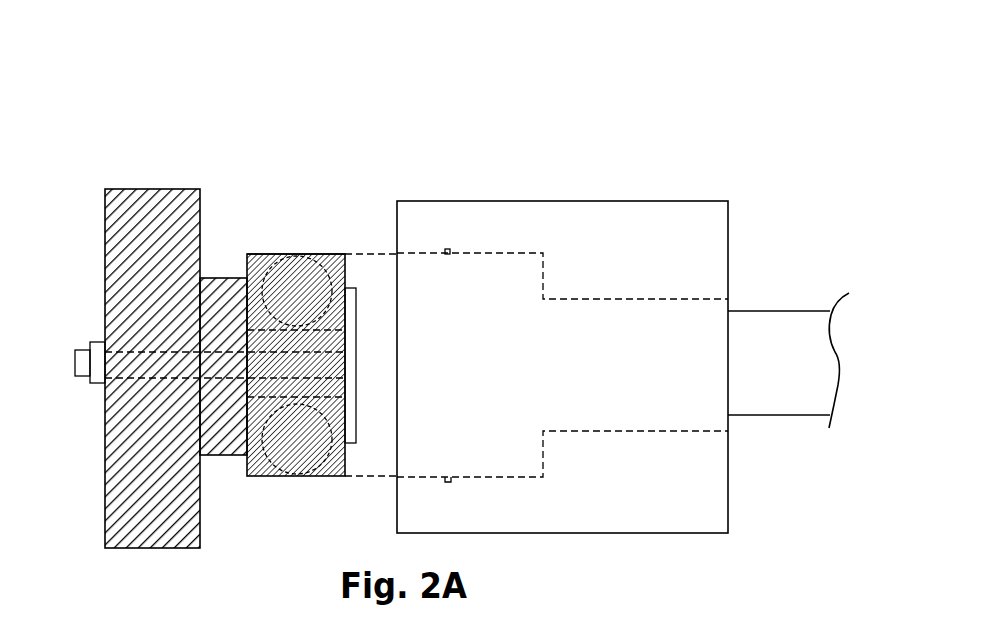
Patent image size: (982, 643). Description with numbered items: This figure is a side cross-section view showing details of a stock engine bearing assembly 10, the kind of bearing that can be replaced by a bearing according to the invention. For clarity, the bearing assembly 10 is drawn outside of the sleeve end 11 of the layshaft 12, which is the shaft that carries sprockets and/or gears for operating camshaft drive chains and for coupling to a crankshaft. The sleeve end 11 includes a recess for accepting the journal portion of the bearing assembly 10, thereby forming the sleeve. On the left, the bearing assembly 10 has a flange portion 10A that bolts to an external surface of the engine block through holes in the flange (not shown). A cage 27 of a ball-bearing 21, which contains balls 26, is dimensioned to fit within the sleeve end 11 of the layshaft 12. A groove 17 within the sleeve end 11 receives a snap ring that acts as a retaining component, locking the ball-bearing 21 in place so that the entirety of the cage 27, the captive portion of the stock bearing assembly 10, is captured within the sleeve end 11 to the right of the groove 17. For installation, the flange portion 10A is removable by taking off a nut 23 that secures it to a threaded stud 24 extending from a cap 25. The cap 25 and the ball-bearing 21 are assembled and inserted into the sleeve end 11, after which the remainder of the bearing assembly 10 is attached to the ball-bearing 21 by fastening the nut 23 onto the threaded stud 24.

The stock bearing assembly 10 is at (291, 150).
The flange portion 10A is at (105, 217).
The sleeve end 11 is at (572, 201).
The layshaft 12 is at (807, 333).
The groove 17 is at (447, 248).
The ball-bearing 21 is at (253, 477).
The nut 23 is at (88, 382).
The threaded stud 24 is at (75, 367).
The cap 25 is at (352, 287).
The balls 26 is at (301, 298).
The cage 27 is at (323, 254).